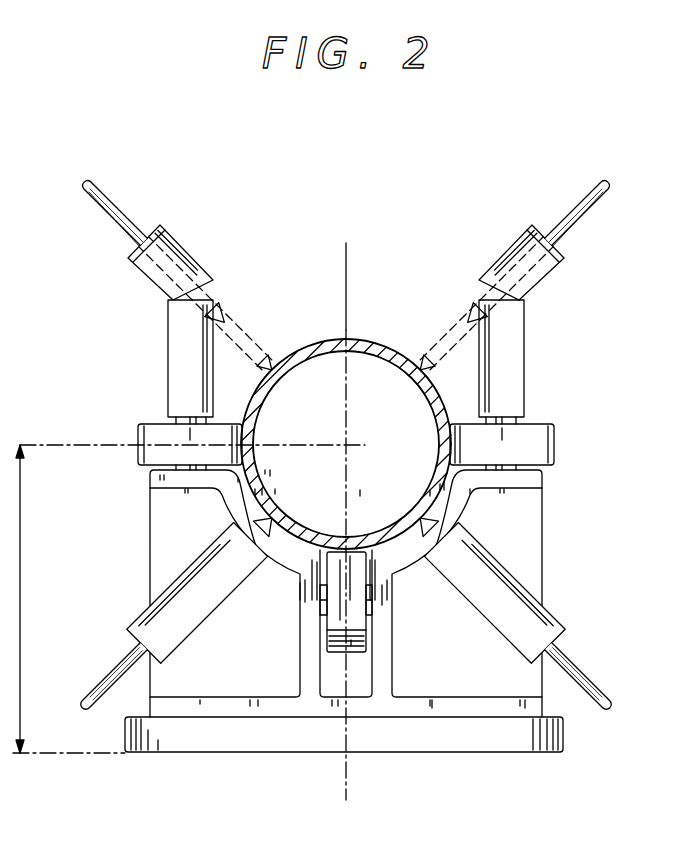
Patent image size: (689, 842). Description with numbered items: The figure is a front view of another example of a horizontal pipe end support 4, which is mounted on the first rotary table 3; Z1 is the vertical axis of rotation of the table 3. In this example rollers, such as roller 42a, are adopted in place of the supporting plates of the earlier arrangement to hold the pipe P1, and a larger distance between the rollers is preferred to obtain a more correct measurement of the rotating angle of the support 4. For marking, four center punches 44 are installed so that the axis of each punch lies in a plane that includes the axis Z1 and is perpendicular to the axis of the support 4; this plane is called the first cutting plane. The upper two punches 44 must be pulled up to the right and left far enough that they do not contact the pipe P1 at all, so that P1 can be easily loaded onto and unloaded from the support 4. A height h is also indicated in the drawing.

The center punch 44 is at (84, 178).
The roller 42a is at (147, 434).
The No. 1 rotary table 3 is at (562, 741).
The horizontal pipe end support 4 is at (431, 712).
The pipe P1 is at (382, 344).
The vertical axis of rotation Z1 is at (192, 510).
The height dimension h is at (69, 599).